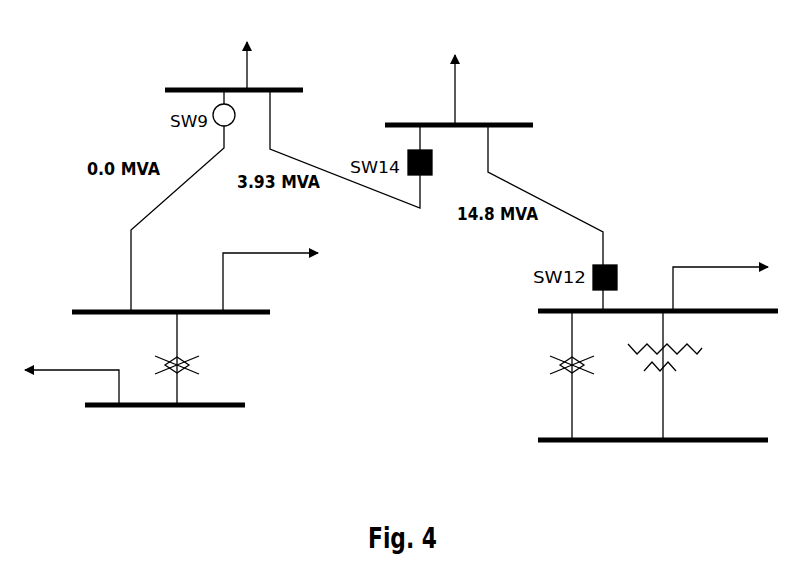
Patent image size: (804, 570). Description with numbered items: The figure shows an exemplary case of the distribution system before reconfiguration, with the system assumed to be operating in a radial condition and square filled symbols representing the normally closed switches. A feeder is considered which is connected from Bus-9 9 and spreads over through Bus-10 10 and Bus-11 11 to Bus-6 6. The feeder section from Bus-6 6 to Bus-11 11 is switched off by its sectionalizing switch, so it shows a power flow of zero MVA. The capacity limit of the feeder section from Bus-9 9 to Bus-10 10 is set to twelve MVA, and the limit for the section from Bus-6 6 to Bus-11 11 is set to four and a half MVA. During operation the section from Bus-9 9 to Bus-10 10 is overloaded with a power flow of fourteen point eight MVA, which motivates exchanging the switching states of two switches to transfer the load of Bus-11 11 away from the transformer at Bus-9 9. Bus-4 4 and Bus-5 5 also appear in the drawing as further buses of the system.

The bus 4 is at (623, 436).
The bus 5 is at (162, 375).
The Bus- 6 is at (201, 274).
The Bus- 9 is at (629, 278).
The Bus- 10 is at (438, 96).
The Bus- 11 is at (205, 68).